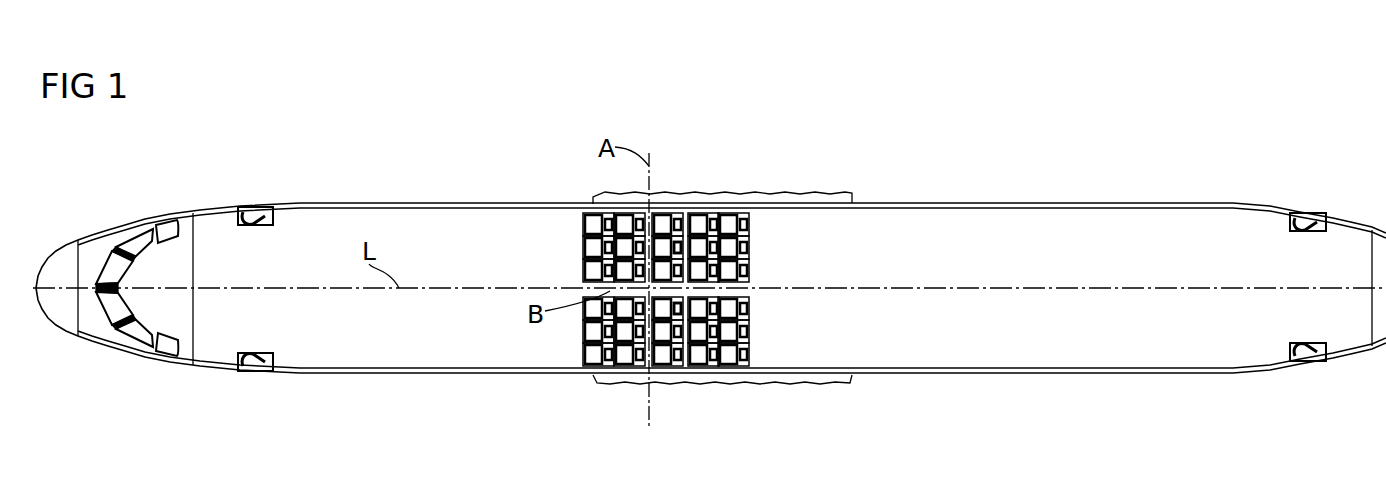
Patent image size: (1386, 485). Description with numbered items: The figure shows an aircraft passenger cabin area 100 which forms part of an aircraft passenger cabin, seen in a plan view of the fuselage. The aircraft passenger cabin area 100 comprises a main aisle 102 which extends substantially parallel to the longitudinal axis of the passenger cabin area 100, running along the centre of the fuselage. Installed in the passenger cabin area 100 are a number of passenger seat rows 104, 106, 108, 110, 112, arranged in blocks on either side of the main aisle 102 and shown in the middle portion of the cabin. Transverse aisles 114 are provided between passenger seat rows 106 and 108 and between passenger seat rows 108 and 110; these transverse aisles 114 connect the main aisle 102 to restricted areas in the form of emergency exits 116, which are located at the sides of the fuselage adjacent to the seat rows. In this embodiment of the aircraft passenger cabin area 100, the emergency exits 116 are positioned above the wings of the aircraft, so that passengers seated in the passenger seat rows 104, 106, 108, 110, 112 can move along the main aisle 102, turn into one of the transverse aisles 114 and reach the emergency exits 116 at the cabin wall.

The aircraft passenger cabin area 100 is at (760, 126).
The main aisle 102 is at (592, 283).
The passenger seat row 104 is at (594, 222).
The passenger seat row 106 is at (625, 357).
The passenger seat row 108 is at (700, 206).
The passenger seat row 110 is at (697, 357).
The passenger seat row 112 is at (727, 222).
The transverse aisles 114 is at (650, 268).
The emergency exits 116 is at (665, 206).